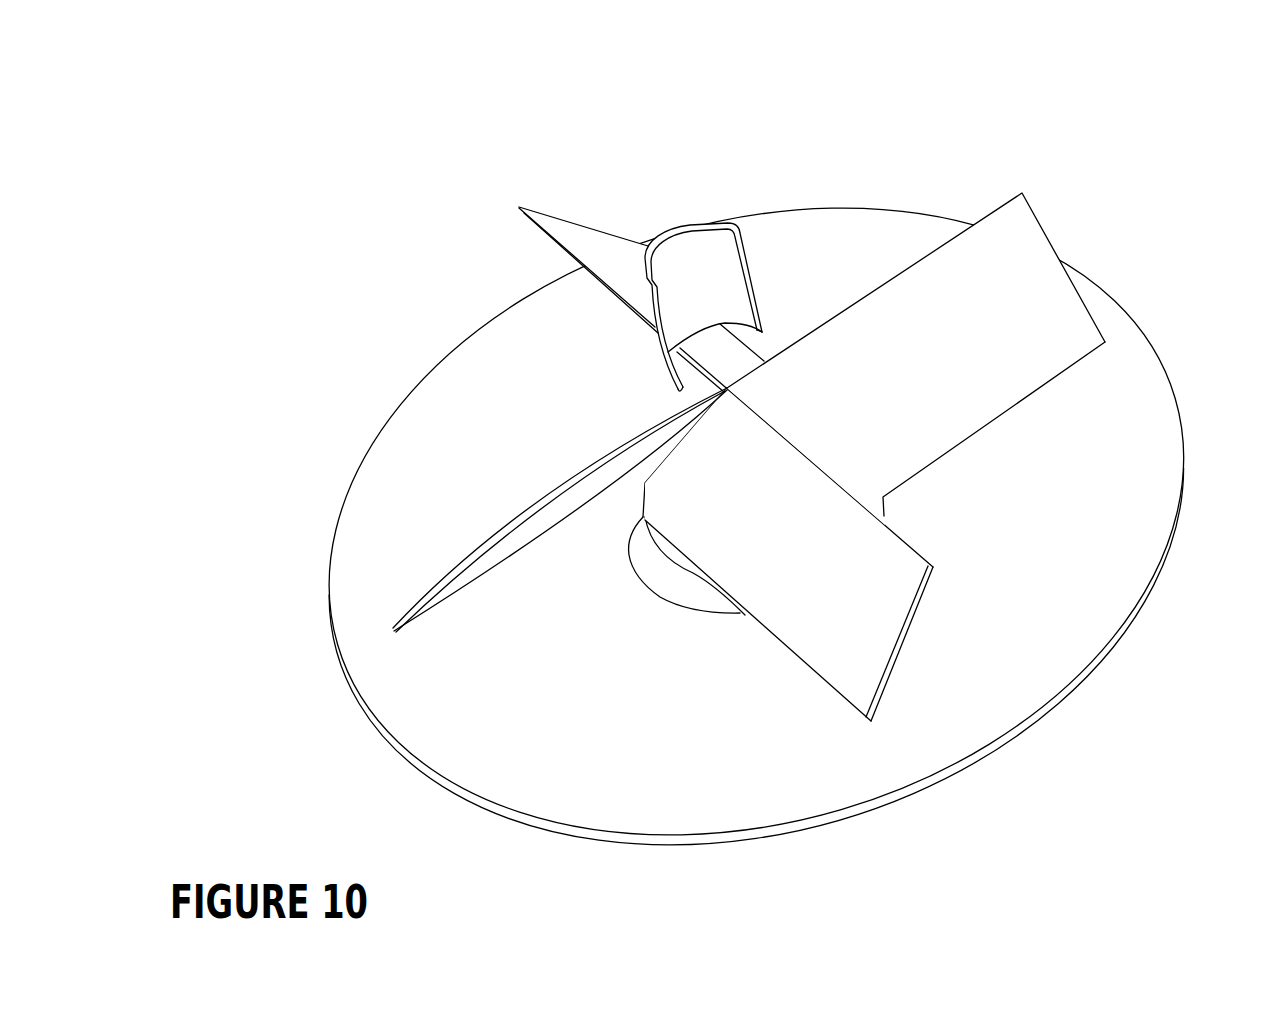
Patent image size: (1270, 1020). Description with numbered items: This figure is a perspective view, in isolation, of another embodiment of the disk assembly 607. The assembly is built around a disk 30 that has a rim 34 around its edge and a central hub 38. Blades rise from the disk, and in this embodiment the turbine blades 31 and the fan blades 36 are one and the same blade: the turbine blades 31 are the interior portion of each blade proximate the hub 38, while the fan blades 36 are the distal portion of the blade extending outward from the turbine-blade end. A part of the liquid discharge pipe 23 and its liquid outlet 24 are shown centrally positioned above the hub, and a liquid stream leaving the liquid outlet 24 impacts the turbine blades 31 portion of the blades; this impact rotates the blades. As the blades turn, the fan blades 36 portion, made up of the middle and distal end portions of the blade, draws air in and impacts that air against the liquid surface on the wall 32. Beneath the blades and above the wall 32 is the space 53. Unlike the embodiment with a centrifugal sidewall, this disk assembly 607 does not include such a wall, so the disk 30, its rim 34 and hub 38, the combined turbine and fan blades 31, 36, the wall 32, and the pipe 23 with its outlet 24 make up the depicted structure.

The disk assembly 607 is at (724, 489).
The liquid discharge pipe 23 is at (755, 258).
The liquid outlet 24 is at (769, 317).
The disk 30 is at (680, 675).
The turbine blades 31 is at (760, 392).
The wall 32 is at (1032, 557).
The rim 34 is at (1147, 592).
The fan blades 36 is at (1017, 308).
The hub 38 is at (727, 388).
The space 53 is at (1020, 435).